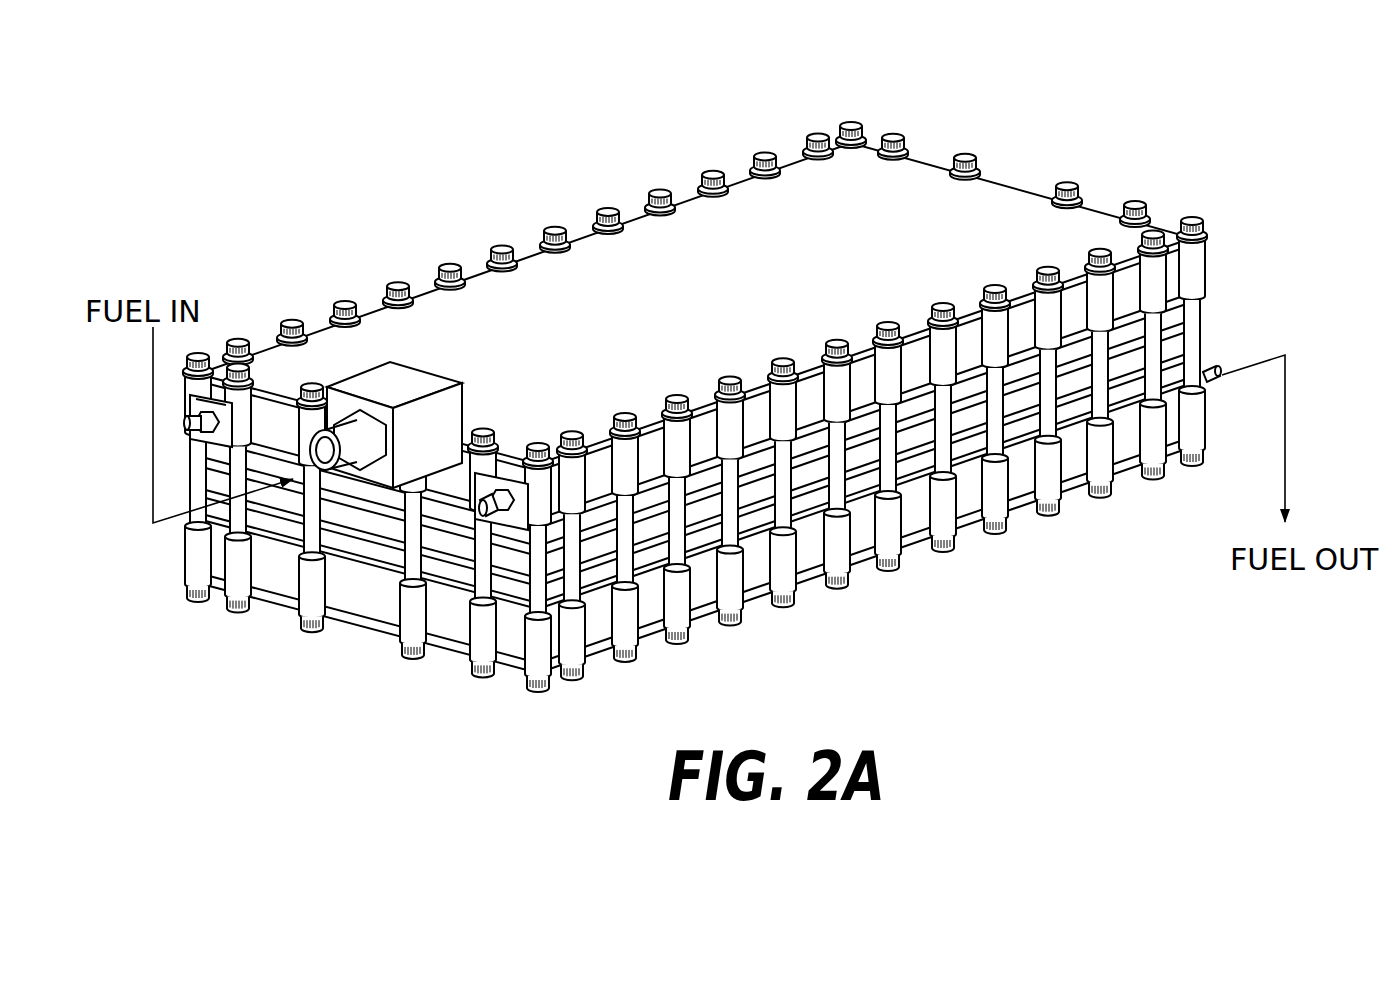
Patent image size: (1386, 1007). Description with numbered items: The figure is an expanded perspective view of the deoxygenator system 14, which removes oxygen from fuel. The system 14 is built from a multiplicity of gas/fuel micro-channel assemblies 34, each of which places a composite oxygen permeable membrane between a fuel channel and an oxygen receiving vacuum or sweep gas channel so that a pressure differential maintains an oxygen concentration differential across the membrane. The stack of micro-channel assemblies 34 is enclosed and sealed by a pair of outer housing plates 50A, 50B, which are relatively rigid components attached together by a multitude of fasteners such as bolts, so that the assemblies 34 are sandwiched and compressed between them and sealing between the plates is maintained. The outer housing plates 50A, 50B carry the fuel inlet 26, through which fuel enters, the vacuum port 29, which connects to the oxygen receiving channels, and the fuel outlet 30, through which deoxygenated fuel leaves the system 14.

The deoxygenator system 14 is at (1032, 156).
The fuel inlet 26 is at (333, 430).
The vacuum port 29 is at (484, 510).
The fuel outlet 30 is at (1220, 355).
The gas/fuel micro-channel assembly 34 is at (360, 530).
The outer housing plate 50A is at (540, 283).
The outer housing plate 50B is at (916, 522).